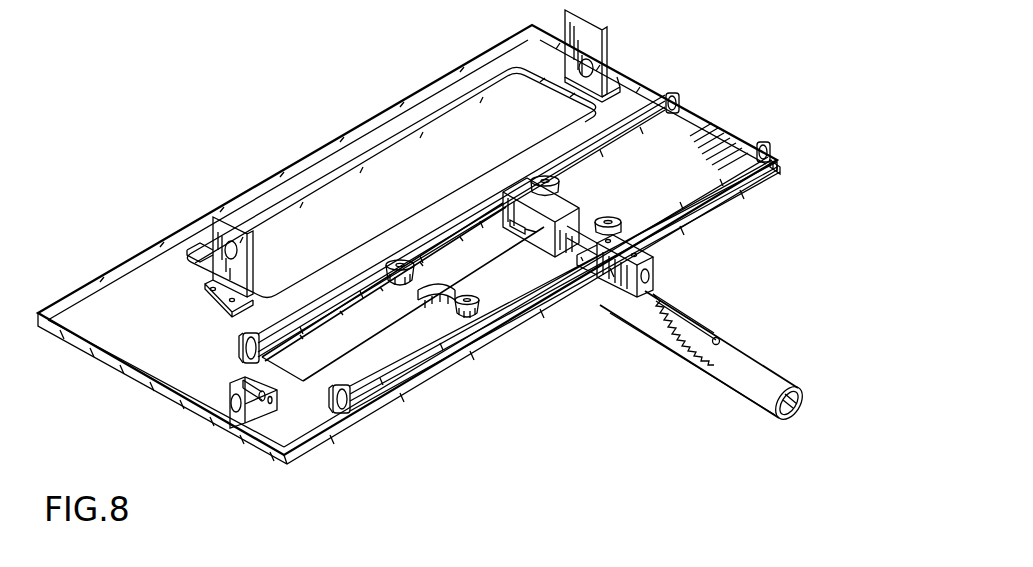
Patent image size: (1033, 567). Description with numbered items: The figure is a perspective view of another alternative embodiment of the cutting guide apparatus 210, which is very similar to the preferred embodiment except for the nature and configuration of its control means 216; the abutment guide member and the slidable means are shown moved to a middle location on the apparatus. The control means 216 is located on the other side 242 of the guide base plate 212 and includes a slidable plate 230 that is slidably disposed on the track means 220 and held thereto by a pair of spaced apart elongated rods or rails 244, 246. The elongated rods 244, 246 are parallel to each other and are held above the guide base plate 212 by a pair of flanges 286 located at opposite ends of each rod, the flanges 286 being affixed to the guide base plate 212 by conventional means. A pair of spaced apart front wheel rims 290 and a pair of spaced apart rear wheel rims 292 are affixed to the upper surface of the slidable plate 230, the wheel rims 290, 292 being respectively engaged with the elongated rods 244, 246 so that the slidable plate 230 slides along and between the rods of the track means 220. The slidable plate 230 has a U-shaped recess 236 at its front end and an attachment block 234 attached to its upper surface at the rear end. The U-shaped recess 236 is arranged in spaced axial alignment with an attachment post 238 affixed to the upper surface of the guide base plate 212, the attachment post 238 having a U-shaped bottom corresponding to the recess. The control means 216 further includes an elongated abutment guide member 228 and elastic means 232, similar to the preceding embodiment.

The cutting guide apparatus 210 is at (222, 78).
The guide base plate 212 is at (190, 339).
The control means 216 is at (570, 345).
The track means 220 is at (778, 149).
The elongated abutment guide member 228 is at (768, 362).
The slidable plate 230 is at (512, 286).
The elastic means 232 is at (342, 338).
The attachment block 234 is at (560, 210).
The U-shaped recess 236 is at (430, 312).
The attachment post 238 is at (236, 420).
The other side of the guide base plate 242 is at (112, 278).
The elongated rod 244 is at (748, 150).
The elongated rod 246 is at (664, 96).
The flange 286 is at (242, 350).
The front wheel rim 290 is at (398, 262).
The rear wheel rim 292 is at (548, 175).